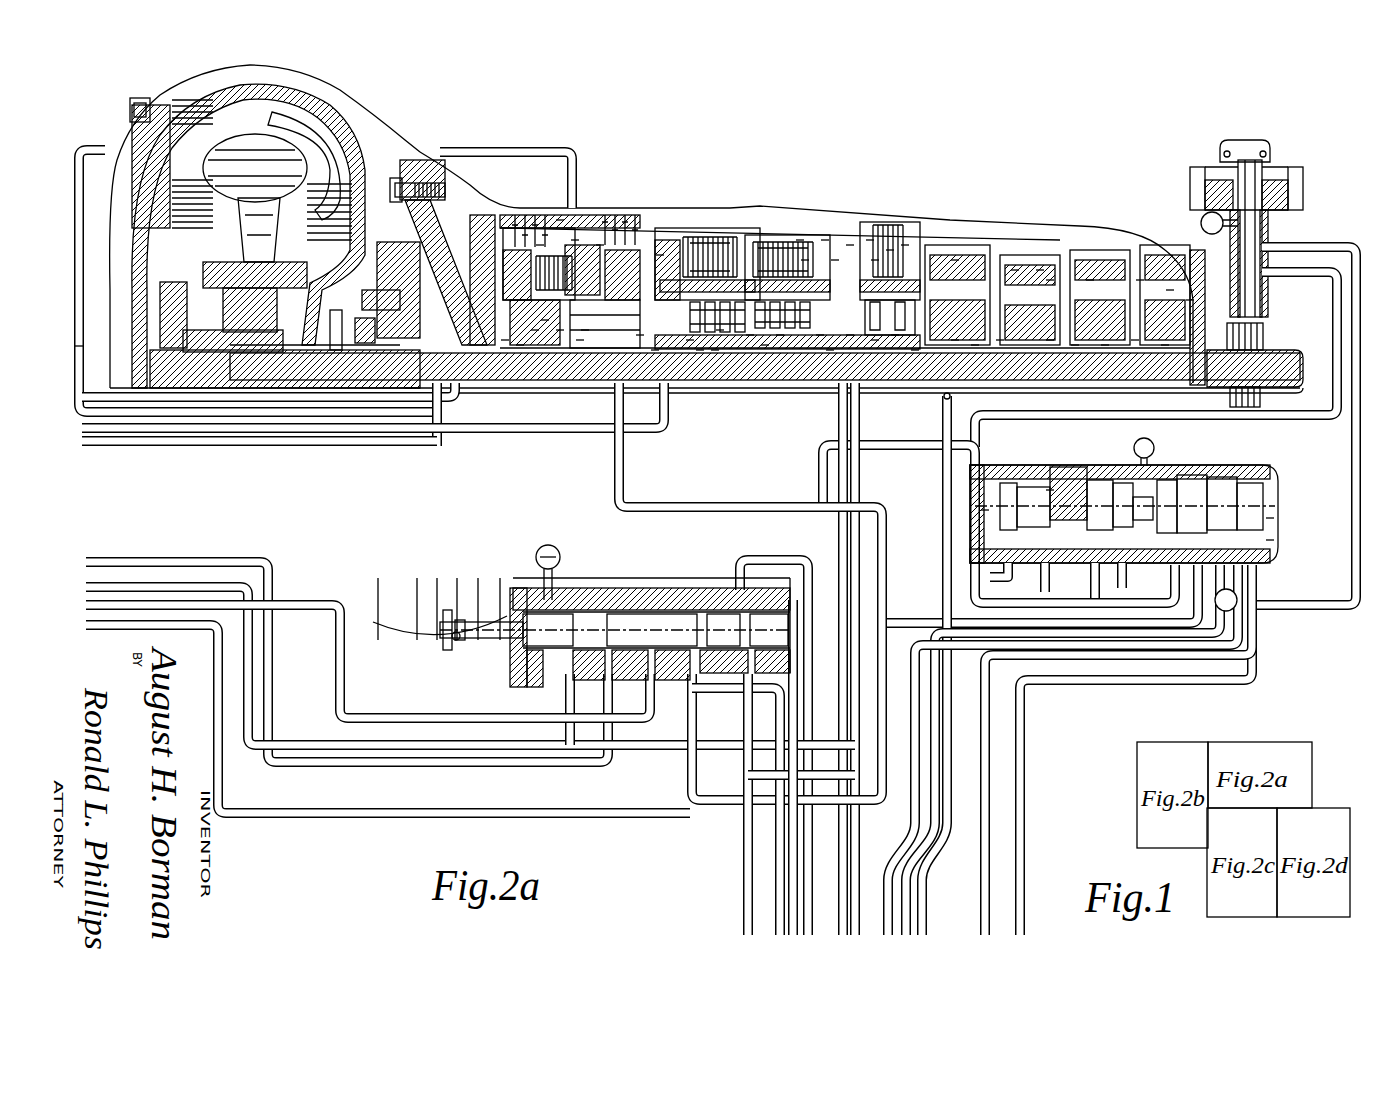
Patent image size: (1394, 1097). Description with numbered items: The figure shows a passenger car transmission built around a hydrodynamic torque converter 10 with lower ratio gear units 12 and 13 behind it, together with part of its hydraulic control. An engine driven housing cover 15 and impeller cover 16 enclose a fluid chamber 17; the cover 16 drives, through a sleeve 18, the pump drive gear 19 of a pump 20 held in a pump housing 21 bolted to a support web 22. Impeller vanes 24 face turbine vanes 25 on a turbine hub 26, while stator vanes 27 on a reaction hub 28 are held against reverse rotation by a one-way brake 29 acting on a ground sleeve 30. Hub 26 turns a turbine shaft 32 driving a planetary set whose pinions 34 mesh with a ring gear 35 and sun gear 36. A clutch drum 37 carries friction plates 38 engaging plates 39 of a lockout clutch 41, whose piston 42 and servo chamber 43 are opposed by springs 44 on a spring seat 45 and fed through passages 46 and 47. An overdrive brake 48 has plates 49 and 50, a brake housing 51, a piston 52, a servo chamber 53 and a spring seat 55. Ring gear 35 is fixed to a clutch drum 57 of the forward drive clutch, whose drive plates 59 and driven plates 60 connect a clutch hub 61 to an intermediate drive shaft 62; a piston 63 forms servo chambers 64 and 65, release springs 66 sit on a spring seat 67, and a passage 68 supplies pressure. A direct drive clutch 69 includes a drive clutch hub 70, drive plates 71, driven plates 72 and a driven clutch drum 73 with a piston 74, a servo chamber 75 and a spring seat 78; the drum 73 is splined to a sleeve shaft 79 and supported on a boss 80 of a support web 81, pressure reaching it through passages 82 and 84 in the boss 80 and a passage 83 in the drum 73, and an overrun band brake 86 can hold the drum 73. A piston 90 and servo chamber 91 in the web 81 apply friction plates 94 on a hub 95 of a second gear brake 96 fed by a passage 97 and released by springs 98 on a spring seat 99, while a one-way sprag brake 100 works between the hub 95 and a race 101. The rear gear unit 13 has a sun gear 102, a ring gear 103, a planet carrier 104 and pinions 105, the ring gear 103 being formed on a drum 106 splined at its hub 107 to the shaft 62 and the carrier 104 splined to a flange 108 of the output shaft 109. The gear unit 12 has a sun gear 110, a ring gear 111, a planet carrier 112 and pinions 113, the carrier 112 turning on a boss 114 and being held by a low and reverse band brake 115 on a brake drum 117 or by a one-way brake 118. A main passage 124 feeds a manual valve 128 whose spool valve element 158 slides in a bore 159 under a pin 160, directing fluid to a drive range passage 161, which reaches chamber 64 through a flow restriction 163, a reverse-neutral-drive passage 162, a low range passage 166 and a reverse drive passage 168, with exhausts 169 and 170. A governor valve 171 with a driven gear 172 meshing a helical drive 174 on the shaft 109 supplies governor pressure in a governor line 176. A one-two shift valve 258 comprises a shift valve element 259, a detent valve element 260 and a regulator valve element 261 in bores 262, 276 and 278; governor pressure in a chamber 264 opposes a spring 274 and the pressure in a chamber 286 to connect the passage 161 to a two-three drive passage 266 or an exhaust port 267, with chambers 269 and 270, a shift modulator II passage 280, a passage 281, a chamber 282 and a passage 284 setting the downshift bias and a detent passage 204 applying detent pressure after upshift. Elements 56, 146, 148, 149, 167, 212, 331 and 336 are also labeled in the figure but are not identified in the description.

The transmission 10 is at (377, 134).
The planetary gear set 12 is at (1070, 275).
The rear gear unit 13 is at (1129, 242).
The housing 15 is at (133, 195).
The turbine 16 is at (340, 133).
The pump impeller 17 is at (300, 160).
The bearing 18 is at (337, 312).
The output shaft 19 is at (405, 360).
The stator support 20 is at (380, 288).
The pump housing 21 is at (393, 270).
The bolt 22 is at (440, 200).
The stator 24 is at (350, 170).
The converter cover 25 is at (178, 162).
The seal 26 is at (170, 310).
The turbine hub 27 is at (266, 232).
The hub flange 28 is at (262, 288).
The thrust washer 29 is at (240, 336).
The input shaft 30 is at (318, 360).
The oil passage 32 is at (413, 390).
The pump drive 34 is at (458, 292).
The clutch drum 35 is at (660, 255).
The clutch hub 36 is at (600, 345).
The pump body 37 is at (452, 225).
The forward clutch 38 is at (615, 250).
The clutch plates 39 is at (640, 250).
The piston 41 is at (585, 330).
The seal ring 42 is at (545, 320).
The spring 43 is at (520, 345).
The retainer 44 is at (560, 330).
The snap ring 45 is at (580, 340).
The bushing 46 is at (505, 340).
The seal 47 is at (535, 330).
The front support 48 is at (485, 232).
The spring 49 is at (540, 245).
The pressure plate 50 is at (528, 240).
The clutch drum 51 is at (560, 220).
The piston 52 is at (575, 240).
The return spring 53 is at (600, 245).
The release spring 55 is at (625, 225).
The clutch drum 56 is at (745, 250).
The sun gear 57 is at (700, 250).
The planet carrier 59 is at (720, 245).
The clutch plates 60 is at (765, 255).
The hub 61 is at (735, 345).
The sleeve 62 is at (800, 345).
The ring gear 63 is at (690, 240).
The thrust bearing 64 is at (640, 335).
The sun gear shaft 65 is at (700, 350).
The bushing 66 is at (715, 350).
The pinion 67 is at (720, 330).
The carrier 68 is at (690, 340).
The clutch plates 69 is at (785, 255).
The pinion shaft 70 is at (750, 335).
The carrier plate 71 is at (780, 335).
The clutch piston 72 is at (825, 240).
The clutch drum 73 is at (770, 240).
The spring 74 is at (835, 260).
The thrust washer 75 is at (820, 335).
The ring gear 78 is at (765, 345).
The hub 79 is at (905, 345).
The sun gear 80 is at (875, 340).
The brake drum 81 is at (940, 270).
The passage 82 is at (850, 335).
The bushing 83 is at (830, 350).
The snap ring 84 is at (895, 335).
The retainer 86 is at (805, 260).
The clutch assembly 90 is at (925, 250).
The drum 91 is at (955, 260).
The piston 94 is at (850, 245).
The spring 95 is at (890, 250).
The pressure plate 96 is at (870, 240).
The hub 97 is at (975, 345).
The sleeve 98 is at (955, 340).
The passage 99 is at (915, 350).
The clutch plates 100 is at (905, 245).
The spring retainer 101 is at (875, 260).
The bearing 102 is at (1135, 340).
The ring gear 103 is at (1140, 280).
The carrier 104 is at (1090, 280).
The sun gear 105 is at (1105, 345).
The rear housing 106 is at (1170, 290).
The thrust washer 107 is at (1165, 345).
The support 108 is at (1190, 300).
The output flange 109 is at (1282, 362).
The pinion 110 is at (1075, 345).
The carrier plate 111 is at (1050, 280).
The pinion shaft 112 is at (800, 240).
The bushing 113 is at (1050, 340).
The sleeve 114 is at (1000, 340).
The brake band 115 is at (1015, 270).
The one-way clutch 117 is at (1040, 270).
The brake drum 118 is at (990, 260).
The line pressure conduit 124 is at (100, 622).
The manual valve body 128 is at (572, 583).
The conduit 146 is at (362, 316).
The conduit 148 is at (456, 439).
The conduit 149 is at (88, 434).
The manual valve spool 158 is at (625, 612).
The valve land 159 is at (670, 612).
The manual valve stem 160 is at (448, 630).
The conduit 161 is at (735, 806).
The conduit 162 is at (106, 558).
The passage 163 is at (655, 350).
The conduit 166 is at (1120, 609).
The conduit 167 is at (1172, 617).
The conduit 168 is at (86, 584).
The exhaust port 169 is at (542, 548).
The valve end 170 is at (780, 620).
The governor valve 171 is at (1283, 146).
The governor drive gear 172 is at (1265, 330).
The output spline 174 is at (1275, 345).
The governor pressure conduit 176 is at (1345, 243).
The conduit 204 is at (950, 830).
The exhaust port 212 is at (1150, 440).
The 1-2 shift valve 258 is at (1293, 507).
The valve land 259 is at (1225, 490).
The valve land 260 is at (1092, 482).
The spring 261 is at (1032, 482).
The valve land 262 is at (1272, 518).
The valve bore 264 is at (1272, 540).
The conduit 266 is at (1254, 640).
The exhaust conduit 267 is at (1228, 612).
The valve land 269 is at (1180, 490).
The valve land 270 is at (1152, 480).
The port 274 is at (1002, 566).
The port 276 is at (1096, 580).
The plug 278 is at (1006, 485).
The conduit 280 is at (1058, 683).
The port 281 is at (1050, 580).
The spring 282 is at (985, 510).
The spring seat 284 is at (1052, 490).
The port 286 is at (1058, 549).
The conduit 331 is at (75, 313).
The conduit 336 is at (80, 347).